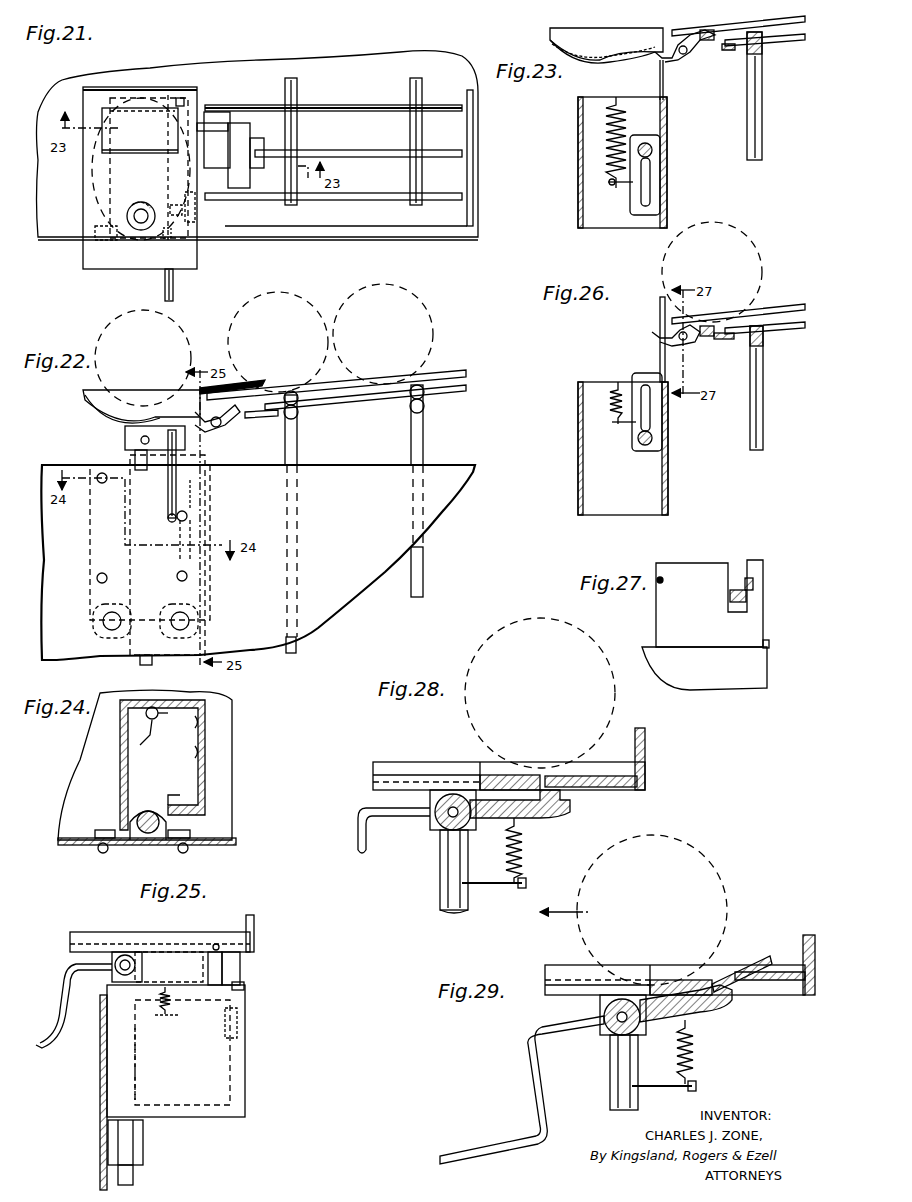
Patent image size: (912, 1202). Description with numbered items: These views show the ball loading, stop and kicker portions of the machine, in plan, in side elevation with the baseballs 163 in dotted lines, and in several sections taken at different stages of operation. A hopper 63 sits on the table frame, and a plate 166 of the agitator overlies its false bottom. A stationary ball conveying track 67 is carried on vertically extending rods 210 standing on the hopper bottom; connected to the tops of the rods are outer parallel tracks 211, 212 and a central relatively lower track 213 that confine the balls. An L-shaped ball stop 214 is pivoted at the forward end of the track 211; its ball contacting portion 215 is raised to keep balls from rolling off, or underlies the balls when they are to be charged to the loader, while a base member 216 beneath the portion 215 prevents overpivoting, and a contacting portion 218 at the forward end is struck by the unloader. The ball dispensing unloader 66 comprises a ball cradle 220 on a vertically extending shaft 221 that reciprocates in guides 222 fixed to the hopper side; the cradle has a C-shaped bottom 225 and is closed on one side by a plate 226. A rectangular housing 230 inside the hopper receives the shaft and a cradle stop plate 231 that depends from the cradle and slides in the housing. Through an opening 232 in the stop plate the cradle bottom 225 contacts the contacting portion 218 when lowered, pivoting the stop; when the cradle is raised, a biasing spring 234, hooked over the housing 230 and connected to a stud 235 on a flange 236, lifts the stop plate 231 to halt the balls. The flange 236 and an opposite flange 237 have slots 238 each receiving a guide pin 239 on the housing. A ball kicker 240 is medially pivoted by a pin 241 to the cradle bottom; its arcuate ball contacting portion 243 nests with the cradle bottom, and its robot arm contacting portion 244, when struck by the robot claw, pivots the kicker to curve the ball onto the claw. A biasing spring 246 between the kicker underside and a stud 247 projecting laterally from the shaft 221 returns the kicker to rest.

In FIG. 21, the hopper 63 is at (62, 242).
In FIG. 22, the hopper 63 is at (336, 594).
In FIG. 24, the hopper 63 is at (76, 812).
In FIG. 25, the hopper 63 is at (100, 1122).
In FIG. 21, the ball dispensing unloader 66 is at (80, 262).
In FIG. 23, the ball dispensing unloader 66 is at (590, 72).
In FIG. 26, the ball dispensing unloader 66 is at (578, 420).
In FIG. 27, the ball dispensing unloader 66 is at (768, 558).
In FIG. 22, the ball dispensing unloader 66 is at (98, 428).
In FIG. 24, the ball dispensing unloader 66 is at (215, 748).
In FIG. 25, the ball dispensing unloader 66 is at (256, 966).
In FIG. 28, the ball dispensing unloader 66 is at (414, 832).
In FIG. 29, the ball dispensing unloader 66 is at (512, 1030).
In FIG. 21, the stationary ball conveying track 67 is at (430, 90).
In FIG. 23, the stationary ball conveying track 67 is at (768, 66).
In FIG. 26, the stationary ball conveying track 67 is at (775, 378).
In FIG. 22, the stationary ball conveying track 67 is at (446, 405).
In FIG. 21, the baseballs 163 is at (100, 186).
In FIG. 26, the baseballs 163 is at (748, 234).
In FIG. 22, the baseballs 163 is at (106, 325).
In FIG. 28, the baseballs 163 is at (522, 622).
In FIG. 29, the baseballs 163 is at (730, 876).
In FIG. 21, the plate 166 is at (455, 70).
In FIG. 21, the vertically extending rods 210 is at (291, 78).
In FIG. 23, the vertically extending rods 210 is at (762, 145).
In FIG. 26, the vertically extending rods 210 is at (763, 435).
In FIG. 22, the vertically extending rods 210 is at (298, 430).
In FIG. 21, the outer parallel track 211 is at (388, 105).
In FIG. 23, the outer parallel track 211 is at (700, 26).
In FIG. 26, the outer parallel track 211 is at (796, 306).
In FIG. 27, the outer parallel track 211 is at (755, 580).
In FIG. 21, the outer parallel track 212 is at (392, 200).
In FIG. 27, the outer parallel track 212 is at (657, 584).
In FIG. 22, the outer parallel track 212 is at (455, 371).
In FIG. 21, the central relatively lower track 213 is at (450, 157).
In FIG. 23, the central relatively lower track 213 is at (782, 44).
In FIG. 26, the central relatively lower track 213 is at (784, 332).
In FIG. 22, the central relatively lower track 213 is at (466, 388).
In FIG. 21, the L-shaped ball stop 214 is at (238, 123).
In FIG. 23, the L-shaped ball stop 214 is at (690, 62).
In FIG. 26, the L-shaped ball stop 214 is at (690, 342).
In FIG. 27, the L-shaped ball stop 214 is at (730, 598).
In FIG. 22, the L-shaped ball stop 214 is at (230, 424).
In FIG. 21, the ball contacting portion 215 is at (238, 182).
In FIG. 23, the ball contacting portion 215 is at (702, 42).
In FIG. 26, the ball contacting portion 215 is at (706, 326).
In FIG. 22, the ball contacting portion 215 is at (250, 386).
In FIG. 21, the base member 216 is at (256, 142).
In FIG. 23, the base member 216 is at (728, 52).
In FIG. 26, the base member 216 is at (720, 342).
In FIG. 22, the base member 216 is at (258, 418).
In FIG. 21, the contacting portion 218 is at (182, 125).
In FIG. 23, the contacting portion 218 is at (660, 60).
In FIG. 26, the contacting portion 218 is at (655, 334).
In FIG. 22, the contacting portion 218 is at (188, 420).
In FIG. 25, the contacting portion 218 is at (217, 944).
In FIG. 21, the ball cradle 220 is at (112, 270).
In FIG. 23, the ball cradle 220 is at (550, 40).
In FIG. 22, the ball cradle 220 is at (95, 414).
In FIG. 25, the ball cradle 220 is at (92, 932).
In FIG. 28, the ball cradle 220 is at (650, 784).
In FIG. 29, the ball cradle 220 is at (562, 965).
In FIG. 21, the vertically extending shaft 221 is at (138, 203).
In FIG. 22, the vertically extending shaft 221 is at (132, 446).
In FIG. 24, the vertically extending shaft 221 is at (158, 810).
In FIG. 25, the vertically extending shaft 221 is at (135, 1175).
In FIG. 28, the vertically extending shaft 221 is at (440, 900).
In FIG. 29, the vertically extending shaft 221 is at (622, 1100).
In FIG. 21, the guides 222 is at (126, 215).
In FIG. 22, the guides 222 is at (116, 640).
In FIG. 24, the guides 222 is at (135, 812).
In FIG. 25, the guides 222 is at (130, 1146).
In FIG. 21, the C-shaped bottom 225 is at (180, 258).
In FIG. 23, the C-shaped bottom 225 is at (598, 68).
In FIG. 22, the C-shaped bottom 225 is at (96, 395).
In FIG. 25, the C-shaped bottom 225 is at (152, 940).
In FIG. 28, the C-shaped bottom 225 is at (506, 775).
In FIG. 29, the C-shaped bottom 225 is at (680, 980).
In FIG. 21, the plate 226 is at (102, 88).
In FIG. 23, the plate 226 is at (556, 30).
In FIG. 22, the plate 226 is at (142, 390).
In FIG. 25, the plate 226 is at (256, 925).
In FIG. 28, the plate 226 is at (646, 748).
In FIG. 29, the plate 226 is at (808, 935).
In FIG. 21, the rectangular housing 230 is at (112, 168).
In FIG. 23, the rectangular housing 230 is at (622, 162).
In FIG. 26, the rectangular housing 230 is at (590, 478).
In FIG. 27, the rectangular housing 230 is at (752, 674).
In FIG. 24, the rectangular housing 230 is at (210, 735).
In FIG. 25, the rectangular housing 230 is at (222, 1090).
In FIG. 21, the cradle stop plate 231 is at (176, 143).
In FIG. 23, the cradle stop plate 231 is at (660, 210).
In FIG. 26, the cradle stop plate 231 is at (660, 362).
In FIG. 27, the cradle stop plate 231 is at (695, 573).
In FIG. 22, the cradle stop plate 231 is at (202, 452).
In FIG. 24, the cradle stop plate 231 is at (208, 758).
In FIG. 25, the cradle stop plate 231 is at (242, 972).
In FIG. 23, the opening 232 is at (660, 88).
In FIG. 26, the opening 232 is at (660, 310).
In FIG. 27, the opening 232 is at (733, 574).
In FIG. 25, the opening 232 is at (228, 962).
In FIG. 23, the biasing spring 234 is at (608, 154).
In FIG. 26, the biasing spring 234 is at (614, 392).
In FIG. 27, the biasing spring 234 is at (770, 646).
In FIG. 24, the biasing spring 234 is at (148, 718).
In FIG. 25, the biasing spring 234 is at (246, 988).
In FIG. 23, the stud 235 is at (618, 186).
In FIG. 26, the stud 235 is at (624, 426).
In FIG. 24, the stud 235 is at (164, 722).
In FIG. 21, the flange 236 is at (168, 95).
In FIG. 23, the flange 236 is at (655, 180).
In FIG. 26, the flange 236 is at (645, 452).
In FIG. 24, the flange 236 is at (190, 702).
In FIG. 25, the flange 236 is at (246, 1046).
In FIG. 21, the opposite flange 237 is at (192, 196).
In FIG. 22, the opposite flange 237 is at (215, 490).
In FIG. 24, the opposite flange 237 is at (210, 800).
In FIG. 25, the opposite flange 237 is at (142, 1090).
In FIG. 23, the slots 238 is at (651, 170).
In FIG. 26, the slots 238 is at (652, 416).
In FIG. 22, the slots 238 is at (190, 562).
In FIG. 24, the slots 238 is at (200, 716).
In FIG. 21, the guide pin 239 is at (180, 98).
In FIG. 23, the guide pin 239 is at (652, 150).
In FIG. 26, the guide pin 239 is at (652, 438).
In FIG. 22, the guide pin 239 is at (190, 514).
In FIG. 25, the guide pin 239 is at (228, 1032).
In FIG. 21, the ball kicker 240 is at (165, 152).
In FIG. 22, the ball kicker 240 is at (140, 440).
In FIG. 25, the ball kicker 240 is at (182, 948).
In FIG. 28, the ball kicker 240 is at (566, 810).
In FIG. 29, the ball kicker 240 is at (716, 1012).
In FIG. 22, the pin 241 is at (168, 426).
In FIG. 25, the pin 241 is at (122, 956).
In FIG. 28, the pin 241 is at (455, 794).
In FIG. 29, the pin 241 is at (618, 1036).
In FIG. 21, the ball contacting portion 243 is at (124, 110).
In FIG. 23, the ball contacting portion 243 is at (585, 54).
In FIG. 28, the ball contacting portion 243 is at (600, 776).
In FIG. 29, the ball contacting portion 243 is at (758, 956).
In FIG. 21, the robot arm contacting portion 244 is at (165, 286).
In FIG. 22, the robot arm contacting portion 244 is at (166, 487).
In FIG. 25, the robot arm contacting portion 244 is at (42, 1052).
In FIG. 28, the robot arm contacting portion 244 is at (356, 844).
In FIG. 29, the robot arm contacting portion 244 is at (462, 1154).
In FIG. 25, the biasing spring 246 is at (172, 1002).
In FIG. 28, the biasing spring 246 is at (524, 850).
In FIG. 29, the biasing spring 246 is at (695, 1058).
In FIG. 25, the stud 247 is at (164, 1018).
In FIG. 28, the stud 247 is at (490, 888).
In FIG. 29, the stud 247 is at (660, 1090).